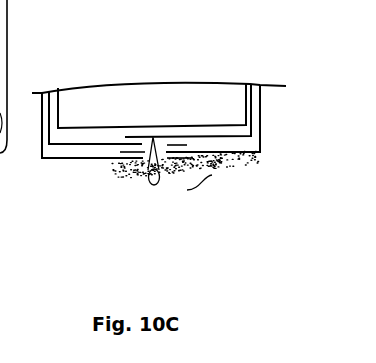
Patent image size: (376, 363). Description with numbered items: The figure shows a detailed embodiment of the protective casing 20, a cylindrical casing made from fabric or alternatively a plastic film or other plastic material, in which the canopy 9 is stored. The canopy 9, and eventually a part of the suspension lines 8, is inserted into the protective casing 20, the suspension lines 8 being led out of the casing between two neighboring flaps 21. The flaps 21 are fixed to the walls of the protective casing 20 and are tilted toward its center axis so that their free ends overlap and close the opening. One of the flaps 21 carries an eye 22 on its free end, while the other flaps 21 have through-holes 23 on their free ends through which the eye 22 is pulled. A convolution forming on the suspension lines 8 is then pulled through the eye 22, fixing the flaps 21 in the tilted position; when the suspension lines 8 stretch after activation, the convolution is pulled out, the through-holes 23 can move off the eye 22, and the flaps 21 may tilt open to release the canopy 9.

The canopy 9 is at (172, 108).
The protective casing 20 is at (259, 115).
The flaps 21 is at (256, 131).
The suspension lines 8 is at (245, 170).
The through-holes 23 is at (212, 175).
The eye 22 is at (160, 186).